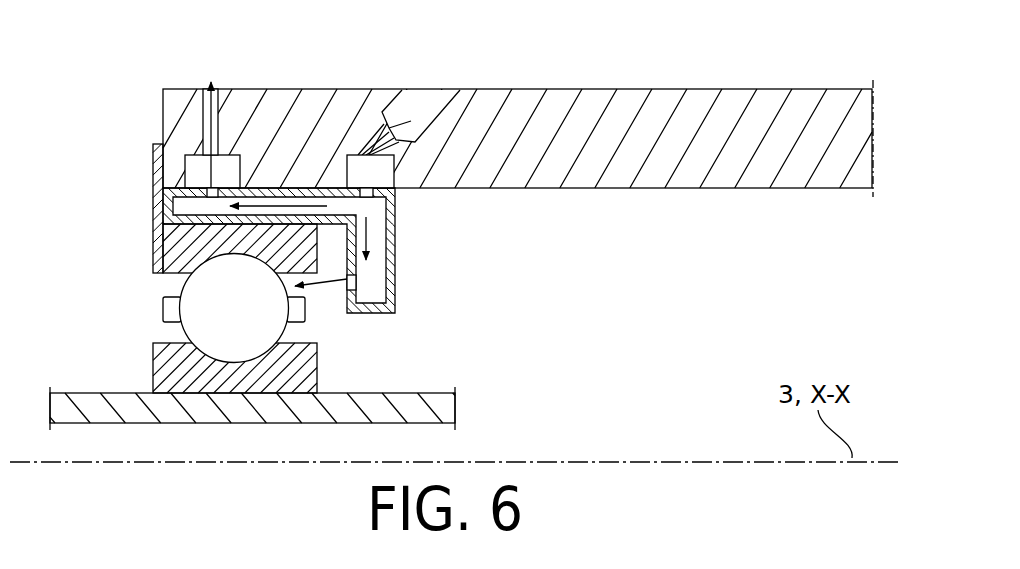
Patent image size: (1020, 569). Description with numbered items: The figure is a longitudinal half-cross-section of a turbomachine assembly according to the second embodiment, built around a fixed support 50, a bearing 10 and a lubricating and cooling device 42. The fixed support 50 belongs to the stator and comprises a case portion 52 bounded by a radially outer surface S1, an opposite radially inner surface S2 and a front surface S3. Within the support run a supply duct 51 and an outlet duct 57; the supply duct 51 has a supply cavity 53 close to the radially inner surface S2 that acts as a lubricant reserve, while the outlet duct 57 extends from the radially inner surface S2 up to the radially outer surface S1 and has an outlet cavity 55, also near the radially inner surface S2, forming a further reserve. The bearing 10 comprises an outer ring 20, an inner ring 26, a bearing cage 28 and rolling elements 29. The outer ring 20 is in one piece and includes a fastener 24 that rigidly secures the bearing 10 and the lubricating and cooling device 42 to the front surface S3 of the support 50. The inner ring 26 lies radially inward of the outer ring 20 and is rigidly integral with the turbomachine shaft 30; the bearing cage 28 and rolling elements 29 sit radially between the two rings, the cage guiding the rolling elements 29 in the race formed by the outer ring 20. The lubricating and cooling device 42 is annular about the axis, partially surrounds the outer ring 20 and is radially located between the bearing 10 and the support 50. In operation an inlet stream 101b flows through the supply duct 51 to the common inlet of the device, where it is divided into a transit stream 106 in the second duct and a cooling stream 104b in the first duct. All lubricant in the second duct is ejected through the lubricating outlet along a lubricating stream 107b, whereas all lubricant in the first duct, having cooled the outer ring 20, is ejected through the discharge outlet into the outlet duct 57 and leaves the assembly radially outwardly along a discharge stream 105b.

The bearing 10 is at (255, 216).
The outer ring 20 is at (163, 250).
The fastener 24 is at (153, 158).
The inner ring 26 is at (165, 378).
The bearing cage 28 is at (163, 310).
The rolling elements 29 is at (202, 330).
The turbomachine shaft 30 is at (440, 410).
The lubricating and cooling device 42 is at (398, 233).
The fixed support 50 is at (792, 112).
The supply duct 51 is at (412, 100).
The case portion 52 is at (865, 122).
The supply cavity 53 is at (355, 165).
The outlet cavity 55 is at (190, 160).
The outlet duct 57 is at (205, 112).
The inlet stream 101b is at (415, 110).
The cooling stream 104b is at (258, 208).
The discharge stream 105b is at (207, 181).
The transit stream 106 is at (367, 240).
The lubricating stream 107b is at (330, 282).
The radially outer surface S1 is at (655, 89).
The radially inner surface S2 is at (823, 188).
The front surface S3 is at (163, 97).